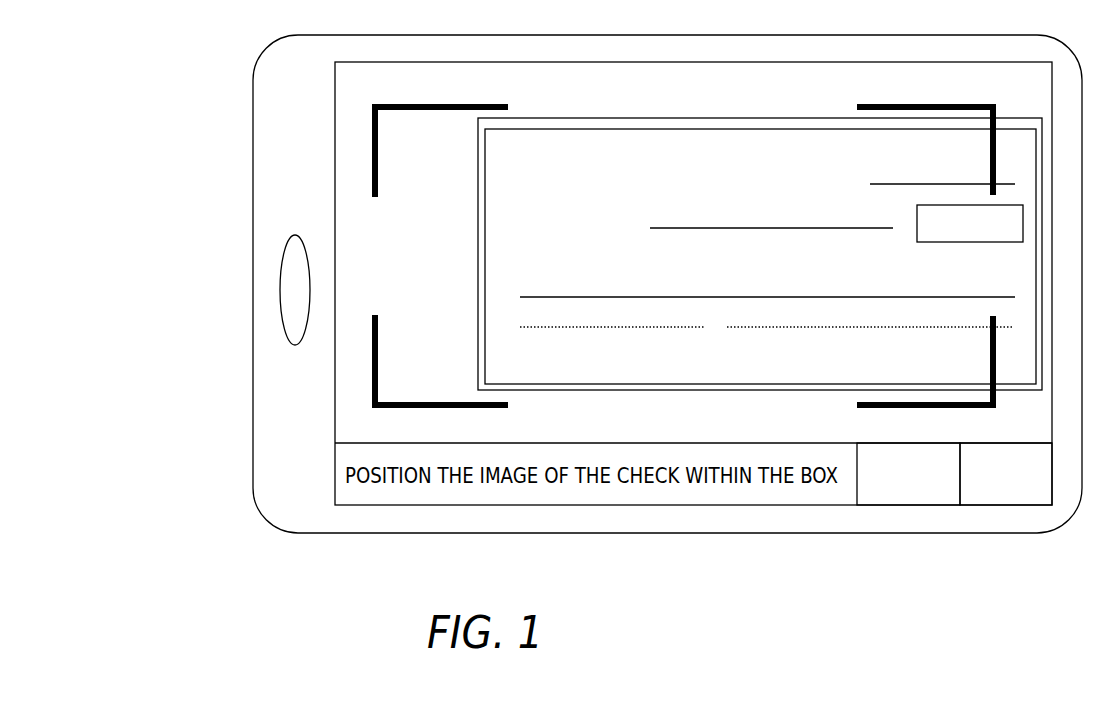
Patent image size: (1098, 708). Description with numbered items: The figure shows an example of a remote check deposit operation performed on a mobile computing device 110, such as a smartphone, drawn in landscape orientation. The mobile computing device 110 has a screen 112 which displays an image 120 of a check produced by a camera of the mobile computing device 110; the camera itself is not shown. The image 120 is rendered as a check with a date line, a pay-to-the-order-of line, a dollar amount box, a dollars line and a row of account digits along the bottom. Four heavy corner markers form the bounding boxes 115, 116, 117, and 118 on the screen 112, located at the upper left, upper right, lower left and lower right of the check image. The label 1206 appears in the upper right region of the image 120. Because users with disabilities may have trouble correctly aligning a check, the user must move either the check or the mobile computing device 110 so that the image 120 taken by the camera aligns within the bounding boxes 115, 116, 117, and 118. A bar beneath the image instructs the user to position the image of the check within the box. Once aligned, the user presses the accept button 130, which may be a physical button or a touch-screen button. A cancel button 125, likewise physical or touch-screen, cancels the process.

The mobile computing device 110 is at (882, 35).
The screen 112 is at (985, 62).
The bounding box 115 is at (473, 107).
The bounding box 116 is at (944, 107).
The bounding box 117 is at (392, 403).
The bounding box 118 is at (893, 408).
The image 120 is at (735, 118).
The check number region 1206 is at (997, 148).
The cancel button 125 is at (1007, 505).
The accept button 130 is at (890, 505).